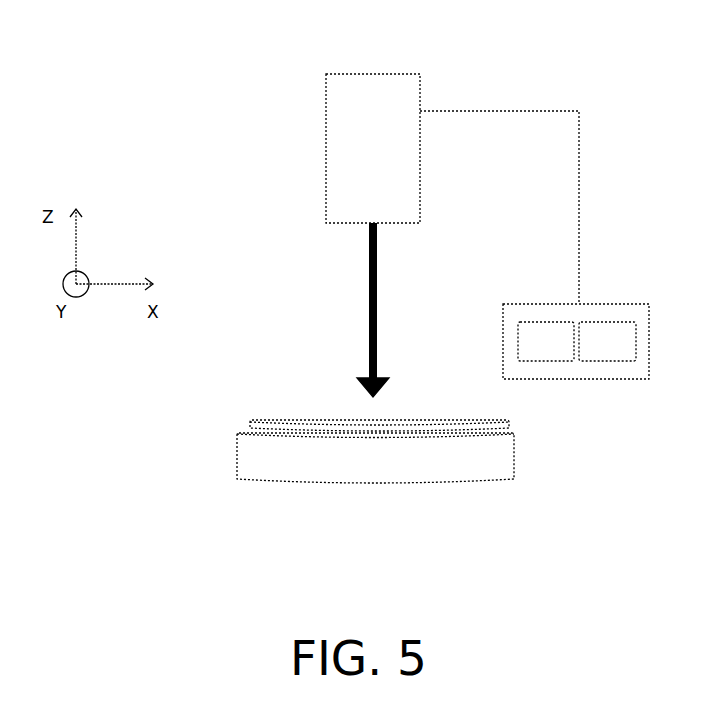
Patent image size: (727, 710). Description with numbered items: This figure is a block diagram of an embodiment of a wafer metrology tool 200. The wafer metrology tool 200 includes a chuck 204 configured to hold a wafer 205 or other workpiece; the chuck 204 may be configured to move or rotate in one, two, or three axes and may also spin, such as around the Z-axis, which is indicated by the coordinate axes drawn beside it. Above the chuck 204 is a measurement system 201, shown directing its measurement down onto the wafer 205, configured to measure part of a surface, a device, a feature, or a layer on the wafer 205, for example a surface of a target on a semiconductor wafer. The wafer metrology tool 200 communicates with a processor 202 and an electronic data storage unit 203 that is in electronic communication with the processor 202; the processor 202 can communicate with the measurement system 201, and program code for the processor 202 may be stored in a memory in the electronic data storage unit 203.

The wafer metrology tool 200 is at (214, 92).
The measurement system 201 is at (392, 160).
The processor 202 is at (564, 352).
The electronic data storage unit 203 is at (626, 352).
The chuck 204 is at (283, 483).
The wafer 205 is at (307, 418).